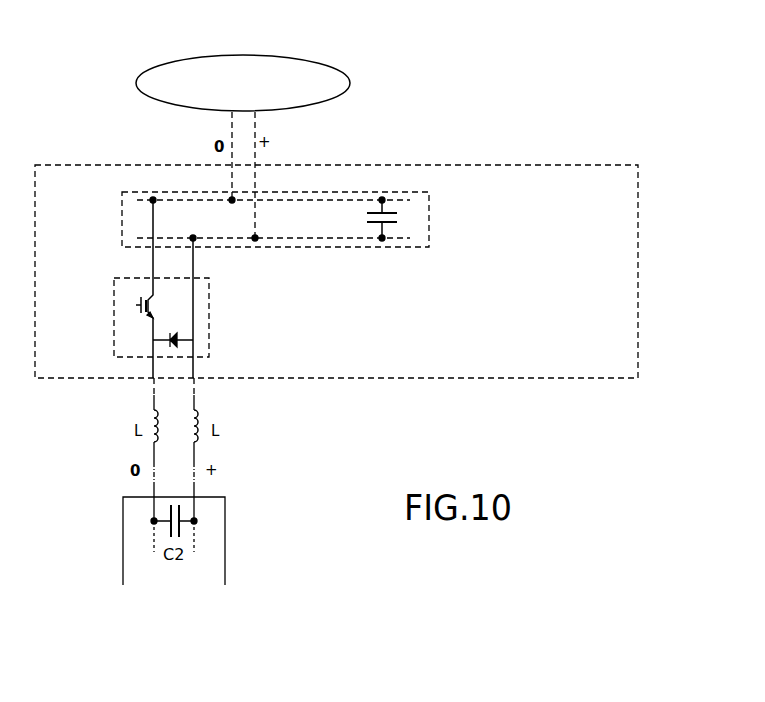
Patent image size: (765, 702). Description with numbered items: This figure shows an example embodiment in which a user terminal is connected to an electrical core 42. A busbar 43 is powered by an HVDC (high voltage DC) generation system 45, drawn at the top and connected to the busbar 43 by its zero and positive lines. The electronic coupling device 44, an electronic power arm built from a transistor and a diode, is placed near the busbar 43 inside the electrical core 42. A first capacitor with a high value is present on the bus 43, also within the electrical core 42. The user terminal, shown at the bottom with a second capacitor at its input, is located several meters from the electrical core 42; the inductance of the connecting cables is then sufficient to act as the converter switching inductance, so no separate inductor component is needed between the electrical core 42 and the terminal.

The electrical core 42 is at (628, 193).
The busbar 43 is at (423, 218).
The electronic coupling device 44 is at (205, 298).
The HVDC generation system 45 is at (343, 83).